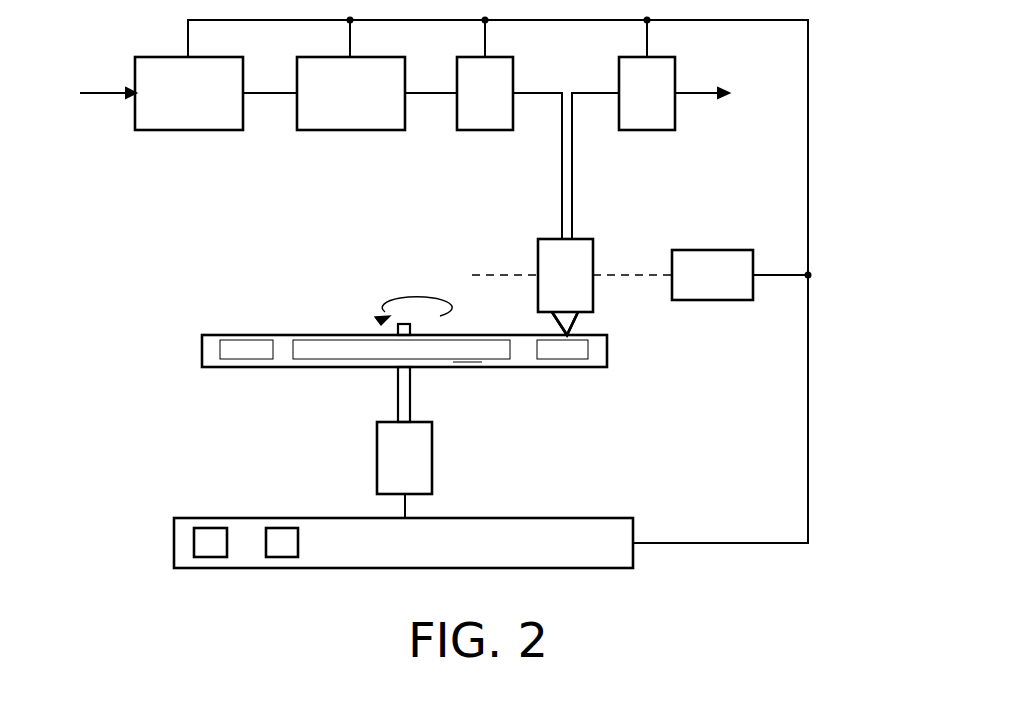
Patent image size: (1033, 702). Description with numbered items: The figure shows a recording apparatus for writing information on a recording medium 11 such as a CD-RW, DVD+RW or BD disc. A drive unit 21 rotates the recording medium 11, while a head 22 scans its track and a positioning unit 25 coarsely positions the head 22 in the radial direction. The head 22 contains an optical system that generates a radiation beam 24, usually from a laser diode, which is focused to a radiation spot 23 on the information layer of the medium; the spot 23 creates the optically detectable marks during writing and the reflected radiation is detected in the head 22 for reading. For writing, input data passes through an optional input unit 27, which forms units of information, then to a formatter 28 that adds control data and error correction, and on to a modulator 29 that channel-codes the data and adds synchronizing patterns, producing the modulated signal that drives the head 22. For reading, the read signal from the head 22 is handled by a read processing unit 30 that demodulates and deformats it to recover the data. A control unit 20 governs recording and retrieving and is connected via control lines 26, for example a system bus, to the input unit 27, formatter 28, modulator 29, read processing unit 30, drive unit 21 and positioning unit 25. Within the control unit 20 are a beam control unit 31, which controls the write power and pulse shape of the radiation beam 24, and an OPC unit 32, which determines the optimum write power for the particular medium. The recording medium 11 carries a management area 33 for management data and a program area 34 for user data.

The recording medium 11 is at (293, 325).
The control unit 20 is at (512, 555).
The drive unit 21 is at (390, 471).
The head 22 is at (551, 288).
The radiation spot 23 is at (571, 332).
The radiation beam 24 is at (563, 330).
The positioning unit 25 is at (698, 288).
The control lines 26 is at (808, 150).
The input unit 27 is at (175, 106).
The formatter 28 is at (337, 106).
The modulator 29 is at (471, 106).
The read processing unit 30 is at (633, 106).
The beam control unit 31 is at (210, 528).
The OPC unit 32 is at (281, 528).
The management area 33 is at (247, 338).
The program area 34 is at (380, 342).